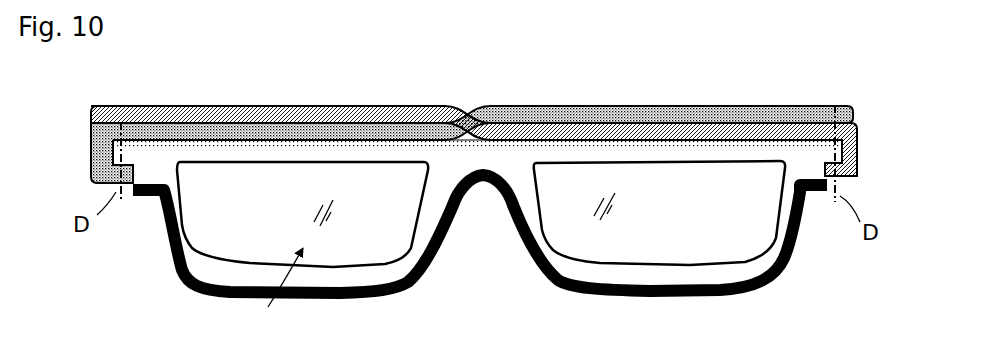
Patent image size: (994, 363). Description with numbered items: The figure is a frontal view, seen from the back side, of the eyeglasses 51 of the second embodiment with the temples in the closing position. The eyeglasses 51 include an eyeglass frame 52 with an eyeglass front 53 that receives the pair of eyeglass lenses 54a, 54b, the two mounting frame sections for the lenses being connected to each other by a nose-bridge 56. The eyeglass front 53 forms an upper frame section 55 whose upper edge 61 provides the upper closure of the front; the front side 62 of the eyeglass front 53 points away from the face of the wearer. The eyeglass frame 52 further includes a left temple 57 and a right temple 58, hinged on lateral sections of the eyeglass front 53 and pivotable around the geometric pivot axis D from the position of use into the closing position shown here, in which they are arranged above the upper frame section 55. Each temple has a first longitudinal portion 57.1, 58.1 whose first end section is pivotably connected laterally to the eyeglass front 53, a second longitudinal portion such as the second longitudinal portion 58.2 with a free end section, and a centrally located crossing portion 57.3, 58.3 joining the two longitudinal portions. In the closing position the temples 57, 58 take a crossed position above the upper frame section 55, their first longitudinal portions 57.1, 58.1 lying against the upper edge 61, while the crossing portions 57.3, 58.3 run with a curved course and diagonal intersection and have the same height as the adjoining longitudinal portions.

The eyeglasses 51 is at (474, 248).
The eyeglass frame 52 is at (580, 290).
The eyeglass front 53 is at (172, 257).
The eyeglass lens 54a is at (350, 218).
The eyeglass lens 54b is at (637, 220).
The upper frame section 55 is at (203, 146).
The nose-bridge 56 is at (468, 150).
The left temple 57 is at (262, 133).
The first longitudinal portion 57.1 is at (312, 106).
The crossing portion 57.3 is at (473, 118).
The right temple 58 is at (643, 130).
The first longitudinal portion 58.1 is at (593, 133).
The second longitudinal portion 58.2 is at (370, 115).
The crossing portion 58.3 is at (450, 112).
The upper edge 61 is at (737, 140).
The front side 62 is at (275, 289).